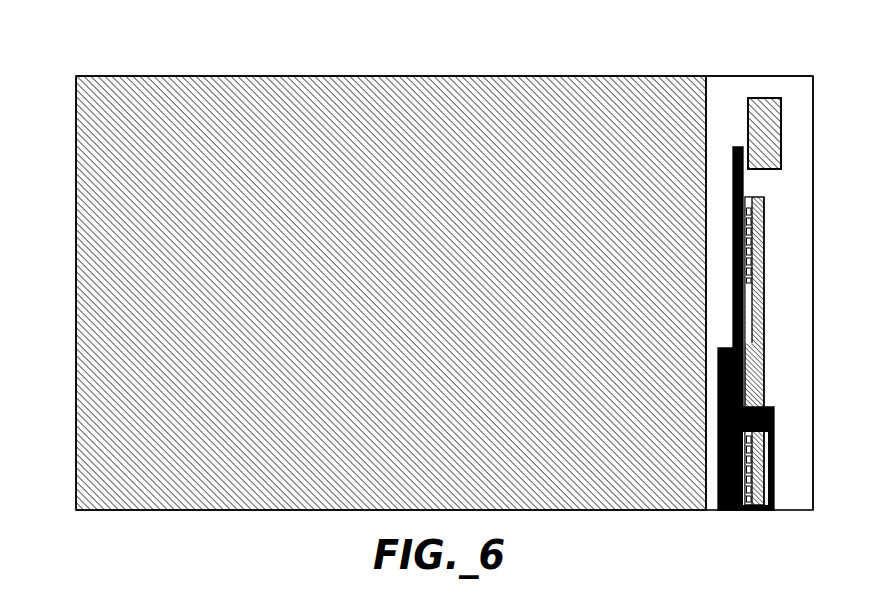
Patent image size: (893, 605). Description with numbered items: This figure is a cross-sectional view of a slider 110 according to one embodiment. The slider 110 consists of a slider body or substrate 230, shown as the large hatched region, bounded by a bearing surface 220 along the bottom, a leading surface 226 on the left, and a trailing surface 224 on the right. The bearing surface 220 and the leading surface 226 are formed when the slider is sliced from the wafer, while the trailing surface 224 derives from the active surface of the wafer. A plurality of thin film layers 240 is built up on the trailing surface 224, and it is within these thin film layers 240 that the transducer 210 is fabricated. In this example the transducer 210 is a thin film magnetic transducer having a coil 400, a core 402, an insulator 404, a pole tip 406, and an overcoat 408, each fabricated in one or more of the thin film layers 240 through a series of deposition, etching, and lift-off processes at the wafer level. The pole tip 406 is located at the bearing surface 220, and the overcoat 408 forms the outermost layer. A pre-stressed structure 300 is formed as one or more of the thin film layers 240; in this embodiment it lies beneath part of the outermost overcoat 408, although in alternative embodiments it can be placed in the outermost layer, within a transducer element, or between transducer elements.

The slider body 110 is at (212, 41).
The leading surface 226 is at (76, 76).
The substrate 230 is at (378, 76).
The bearing surface 220 is at (160, 510).
The trailing surface 224 is at (813, 178).
The thin film layers 240 is at (813, 72).
The pre-stressed structure 300 is at (782, 130).
The coil 400 is at (764, 243).
The insulator 404 is at (764, 278).
The core 402 is at (774, 415).
The transducer 210 is at (788, 292).
The overcoat 408 is at (803, 450).
The pole tip 406 is at (770, 513).